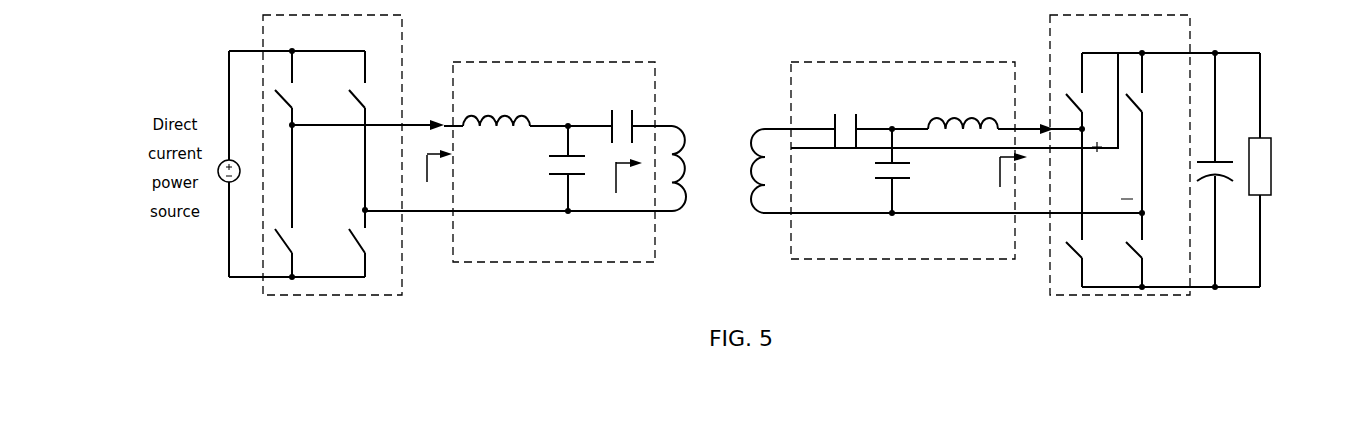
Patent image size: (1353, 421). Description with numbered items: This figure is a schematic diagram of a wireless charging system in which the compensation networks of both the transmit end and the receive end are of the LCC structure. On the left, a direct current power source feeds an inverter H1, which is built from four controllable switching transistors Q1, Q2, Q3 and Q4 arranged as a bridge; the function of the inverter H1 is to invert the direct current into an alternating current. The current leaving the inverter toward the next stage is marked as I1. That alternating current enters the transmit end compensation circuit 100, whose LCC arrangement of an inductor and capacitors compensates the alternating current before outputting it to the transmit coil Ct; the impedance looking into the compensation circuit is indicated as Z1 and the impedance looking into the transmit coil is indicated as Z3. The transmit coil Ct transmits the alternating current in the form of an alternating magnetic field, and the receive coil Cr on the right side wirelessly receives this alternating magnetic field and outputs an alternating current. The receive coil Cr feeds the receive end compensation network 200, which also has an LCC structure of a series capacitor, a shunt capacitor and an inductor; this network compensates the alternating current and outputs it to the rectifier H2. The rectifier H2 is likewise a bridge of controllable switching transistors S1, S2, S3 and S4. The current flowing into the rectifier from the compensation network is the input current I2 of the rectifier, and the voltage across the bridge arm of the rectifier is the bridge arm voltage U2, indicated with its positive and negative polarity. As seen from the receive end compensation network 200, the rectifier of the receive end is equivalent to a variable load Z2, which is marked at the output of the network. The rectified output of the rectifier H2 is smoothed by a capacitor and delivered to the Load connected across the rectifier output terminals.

The inverter H1 is at (332, 155).
The controllable switching transistor Q1 is at (299, 86).
The controllable switching transistor Q2 is at (373, 130).
The controllable switching transistor Q3 is at (299, 201).
The controllable switching transistor Q4 is at (373, 242).
The transmitting-side current I1 is at (368, 112).
The transmit end compensation circuit 100 is at (554, 149).
The input impedance of transmitting compensation network Z1 is at (439, 167).
The impedance looking into transmitting coil Z3 is at (629, 177).
The transmit coil Ct is at (693, 168).
The receive coil Cr is at (770, 171).
The receive end compensation network 200 is at (903, 148).
The input current of the rectifier I2 is at (1041, 120).
The variable load Z2 is at (1021, 208).
The rectifier H2 is at (1120, 155).
The controllable switching transistor S1 is at (1090, 133).
The controllable switching transistor S2 is at (1150, 133).
The controllable switching transistor S3 is at (1090, 250).
The controllable switching transistor S4 is at (1150, 251).
The bridge arm voltage of the rectifier U2 is at (1112, 170).
The load Load is at (1285, 170).